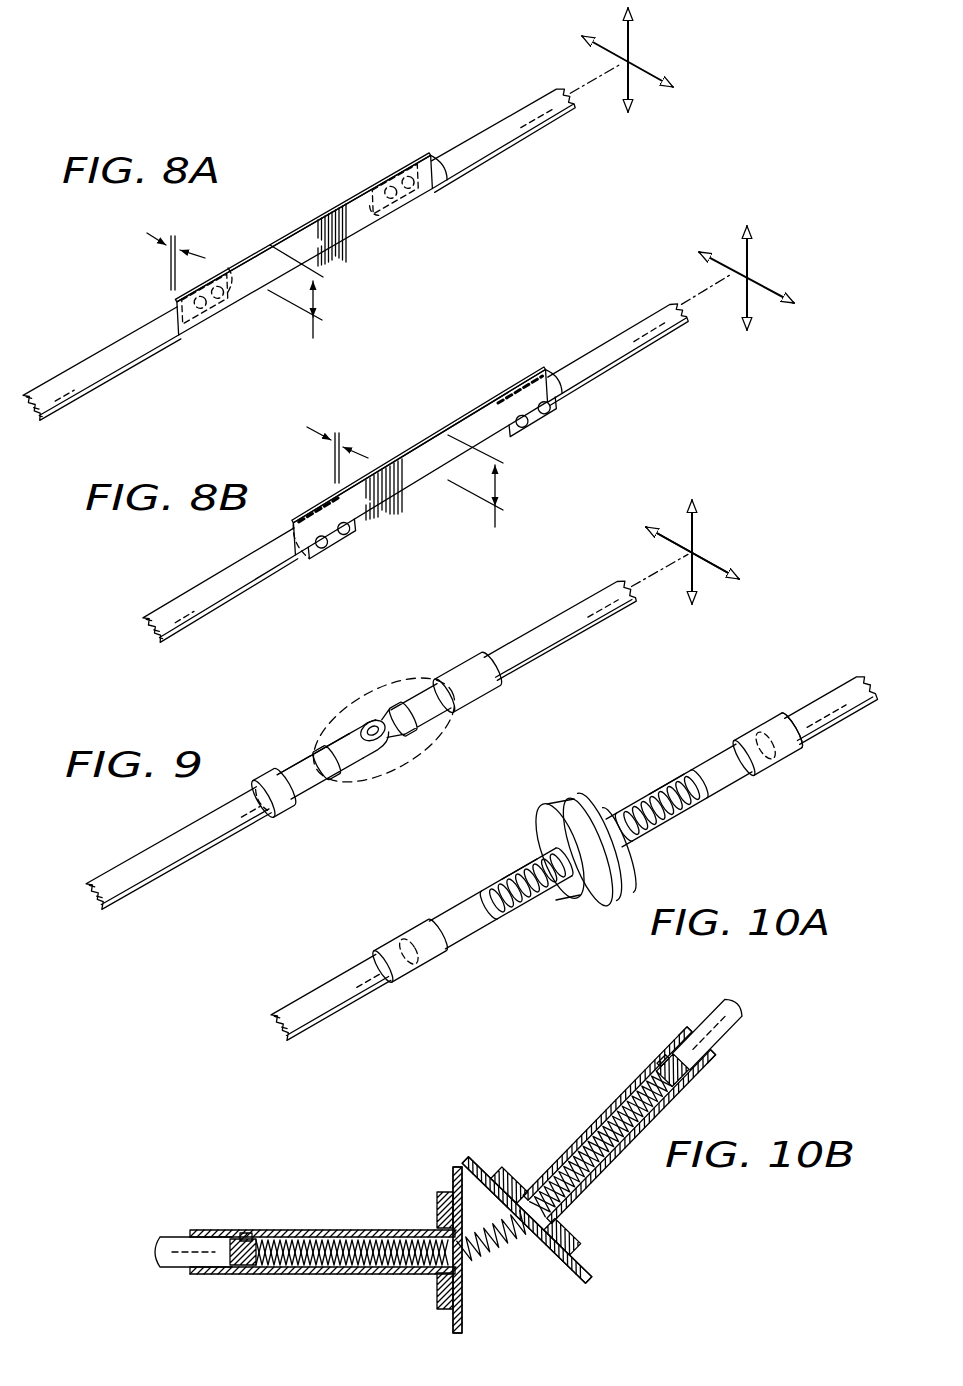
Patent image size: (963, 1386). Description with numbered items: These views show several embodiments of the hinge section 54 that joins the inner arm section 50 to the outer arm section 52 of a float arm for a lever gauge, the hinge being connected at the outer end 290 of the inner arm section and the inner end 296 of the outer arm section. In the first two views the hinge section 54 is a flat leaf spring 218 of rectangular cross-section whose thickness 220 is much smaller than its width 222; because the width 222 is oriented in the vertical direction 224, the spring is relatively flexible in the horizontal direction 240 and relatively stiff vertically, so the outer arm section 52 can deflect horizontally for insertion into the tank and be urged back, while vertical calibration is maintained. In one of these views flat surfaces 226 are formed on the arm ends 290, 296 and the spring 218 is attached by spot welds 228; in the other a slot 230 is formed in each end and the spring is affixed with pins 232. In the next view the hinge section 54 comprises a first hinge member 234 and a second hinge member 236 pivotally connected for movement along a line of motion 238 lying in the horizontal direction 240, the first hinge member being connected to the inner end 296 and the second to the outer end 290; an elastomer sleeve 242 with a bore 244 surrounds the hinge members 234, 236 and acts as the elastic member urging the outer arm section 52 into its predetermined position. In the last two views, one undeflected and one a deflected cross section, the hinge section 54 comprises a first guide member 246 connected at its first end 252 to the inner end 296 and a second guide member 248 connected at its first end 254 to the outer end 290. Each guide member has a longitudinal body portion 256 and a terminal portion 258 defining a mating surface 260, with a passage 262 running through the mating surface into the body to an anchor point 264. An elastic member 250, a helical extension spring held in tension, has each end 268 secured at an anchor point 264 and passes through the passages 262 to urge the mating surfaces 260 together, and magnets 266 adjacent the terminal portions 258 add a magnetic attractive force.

In FIG. 8A, the inner arm section 50 is at (70, 366).
In FIG. 8B, the inner arm section 50 is at (203, 578).
In FIG. 9, the inner arm section 50 is at (160, 847).
In FIG. 10A, the inner arm section 50 is at (325, 990).
In FIG. 10B, the inner arm section 50 is at (173, 1235).
In FIG. 8A, the outer arm section 52 is at (478, 133).
In FIG. 8B, the outer arm section 52 is at (637, 316).
In FIG. 10A, the outer arm section 52 is at (827, 693).
In FIG. 10B, the outer arm section 52 is at (742, 1033).
In FIG. 8A, the hinge section 54 is at (318, 160).
In FIG. 8B, the hinge section 54 is at (450, 388).
In FIG. 9, the hinge section 54 is at (385, 670).
In FIG. 8A, the flat leaf spring 218 is at (295, 242).
In FIG. 8B, the flat leaf spring 218 is at (424, 457).
In FIG. 8A, the thickness 220 is at (156, 248).
In FIG. 8B, the thickness 220 is at (316, 443).
In FIG. 8A, the width 222 is at (301, 305).
In FIG. 8B, the width 222 is at (481, 494).
In FIG. 8A, the vertical direction 224 is at (630, 42).
In FIG. 8B, the vertical direction 224 is at (750, 258).
In FIG. 9, the vertical direction 224 is at (695, 533).
In FIG. 8A, the flat surfaces 226 is at (381, 236).
In FIG. 8A, the spot welds 228 is at (196, 322).
In FIG. 8B, the slot 230 is at (312, 505).
In FIG. 8B, the pins 232 is at (352, 534).
In FIG. 9, the first hinge member 234 is at (405, 750).
In FIG. 9, the second hinge member 236 is at (343, 730).
In FIG. 9, the line of motion 238 is at (692, 586).
In FIG. 8A, the horizontal direction 240 is at (648, 78).
In FIG. 8B, the horizontal direction 240 is at (768, 293).
In FIG. 9, the horizontal direction 240 is at (712, 568).
In FIG. 9, the elastomer sleeve 242 is at (297, 811).
In FIG. 9, the bore 244 is at (258, 814).
In FIG. 10A, the first guide member 246 is at (729, 812).
In FIG. 10B, the first guide member 246 is at (582, 1112).
In FIG. 10A, the second guide member 248 is at (432, 900).
In FIG. 10B, the second guide member 248 is at (328, 1212).
In FIG. 10A, the elastic member 250 is at (517, 870).
In FIG. 10B, the elastic member 250 is at (503, 1255).
In FIG. 10A, the first end of first guide member 252 is at (733, 737).
In FIG. 10A, the first end of second guide member 254 is at (417, 978).
In FIG. 10A, the body portion 256 is at (463, 897).
In FIG. 10B, the body portion 256 is at (348, 1272).
In FIG. 10A, the terminal portion 258 is at (597, 900).
In FIG. 10B, the terminal portion 258 is at (453, 1322).
In FIG. 10B, the mating surface 260 is at (462, 1312).
In FIG. 10A, the passage 262 is at (513, 917).
In FIG. 10B, the anchor point 264 is at (263, 1272).
In FIG. 10A, the magnet 266 is at (545, 815).
In FIG. 10B, the magnet 266 is at (436, 1200).
In FIG. 10B, the end of elastic member 268 is at (242, 1235).
In FIG. 8A, the outer end of inner arm section 290 is at (228, 272).
In FIG. 8B, the outer end of inner arm section 290 is at (303, 550).
In FIG. 9, the outer end of inner arm section 290 is at (253, 787).
In FIG. 10A, the outer end of inner arm section 290 is at (400, 937).
In FIG. 8A, the inner end of outer arm section 296 is at (390, 177).
In FIG. 8B, the inner end of outer arm section 296 is at (538, 385).
In FIG. 9, the inner end of outer arm section 296 is at (488, 653).
In FIG. 10A, the inner end of outer arm section 296 is at (773, 775).
In FIG. 10B, the inner end of outer arm section 296 is at (695, 1033).